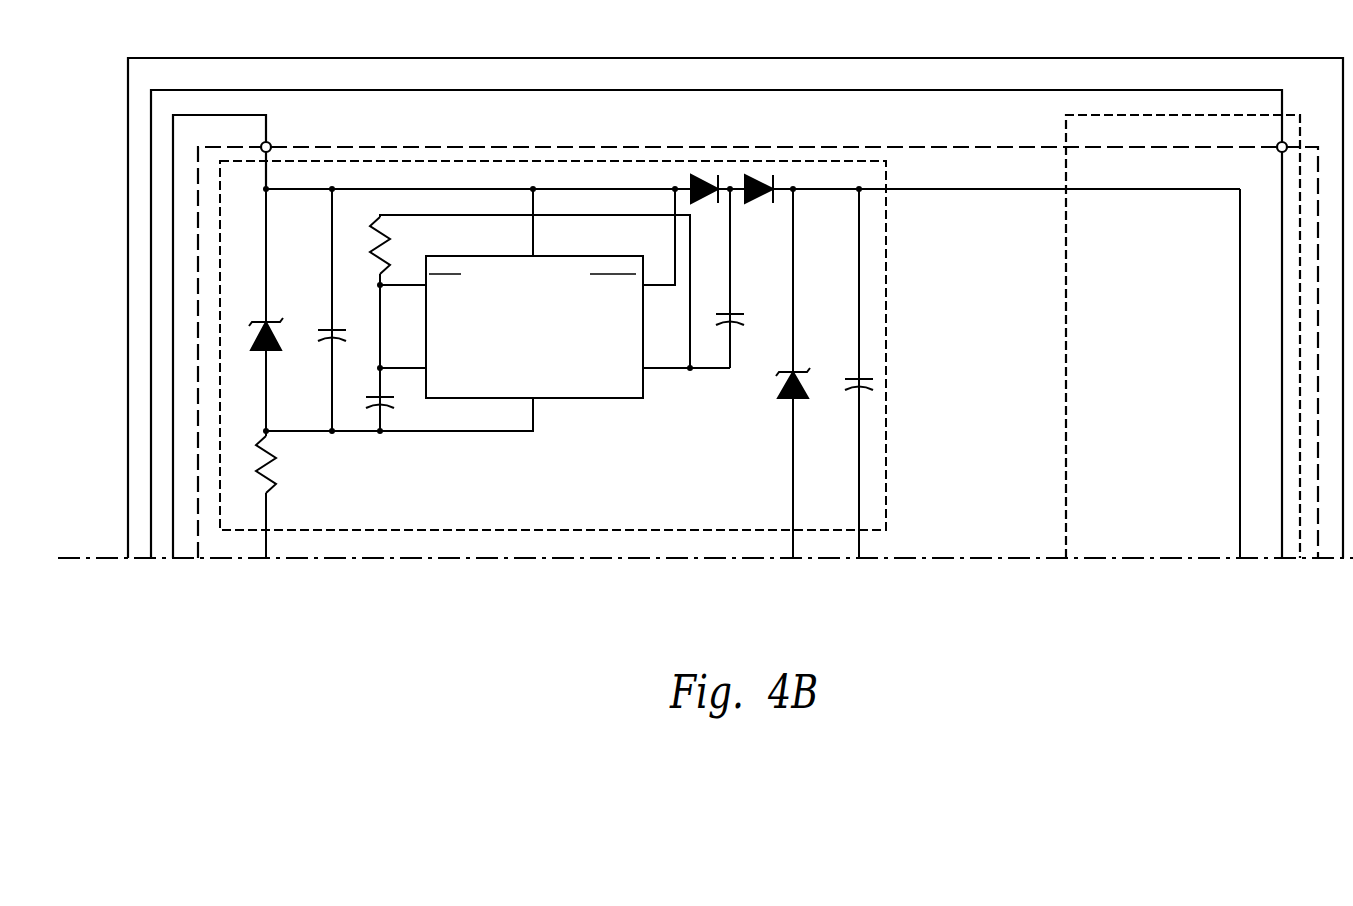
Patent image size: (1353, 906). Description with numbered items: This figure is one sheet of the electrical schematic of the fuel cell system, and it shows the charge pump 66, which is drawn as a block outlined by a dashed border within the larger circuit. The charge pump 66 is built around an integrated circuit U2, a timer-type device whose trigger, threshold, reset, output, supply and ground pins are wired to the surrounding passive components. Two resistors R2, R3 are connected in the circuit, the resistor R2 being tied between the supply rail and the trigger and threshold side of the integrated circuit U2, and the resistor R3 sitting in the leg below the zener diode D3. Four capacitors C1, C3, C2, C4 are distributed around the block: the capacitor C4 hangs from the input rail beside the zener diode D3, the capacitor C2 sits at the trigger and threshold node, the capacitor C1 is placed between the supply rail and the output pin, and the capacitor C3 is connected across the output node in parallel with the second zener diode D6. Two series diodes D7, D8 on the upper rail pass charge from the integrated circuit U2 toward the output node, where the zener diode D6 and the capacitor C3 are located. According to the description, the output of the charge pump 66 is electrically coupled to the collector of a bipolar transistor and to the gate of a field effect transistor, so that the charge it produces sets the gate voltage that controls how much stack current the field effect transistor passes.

The charge pump 66 is at (887, 447).
The integrated circuit U2 is at (534, 341).
The resistor R2 is at (369, 245).
The resistor R3 is at (255, 464).
The capacitor C1 is at (743, 321).
The capacitor C2 is at (368, 404).
The capacitor C3 is at (846, 386).
The capacitor C4 is at (319, 338).
The zener diode D3 is at (255, 334).
The zener diode D6 is at (781, 383).
The diode D7 is at (704, 203).
The diode D8 is at (759, 203).